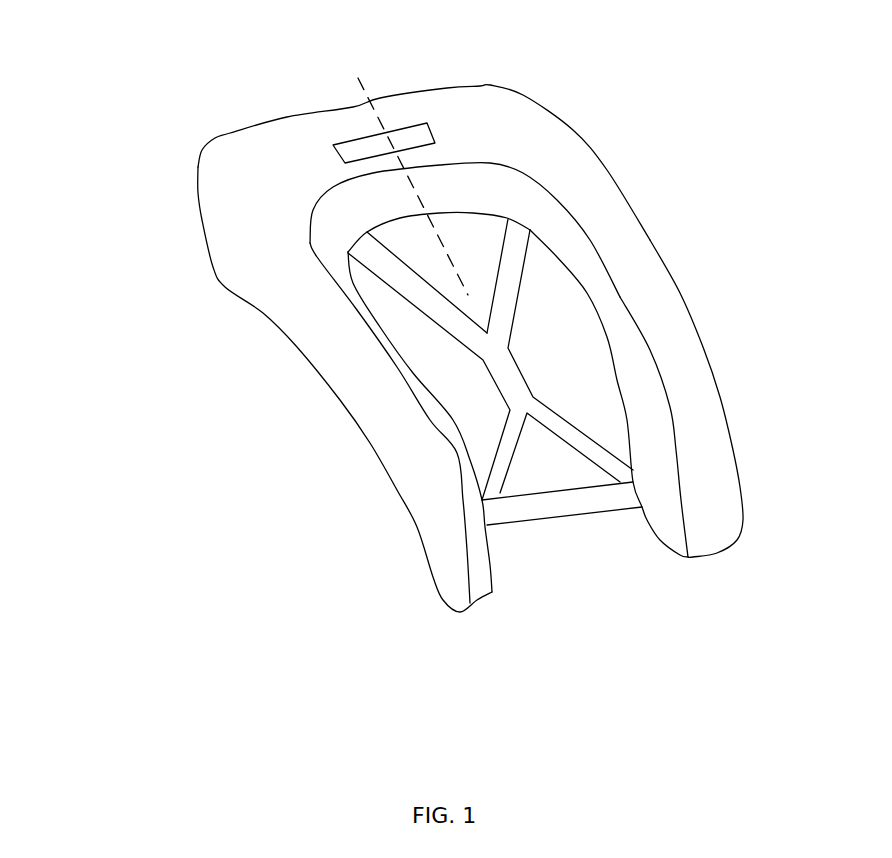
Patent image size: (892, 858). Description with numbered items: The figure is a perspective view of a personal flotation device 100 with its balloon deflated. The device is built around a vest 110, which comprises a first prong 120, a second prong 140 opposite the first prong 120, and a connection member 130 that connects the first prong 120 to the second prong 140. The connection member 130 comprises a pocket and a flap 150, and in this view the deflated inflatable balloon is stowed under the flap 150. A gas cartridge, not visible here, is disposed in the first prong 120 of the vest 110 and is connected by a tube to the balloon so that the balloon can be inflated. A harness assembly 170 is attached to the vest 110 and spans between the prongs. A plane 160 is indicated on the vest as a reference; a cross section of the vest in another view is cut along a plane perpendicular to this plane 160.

The personal flotation device 100 is at (127, 107).
The vest 110 is at (187, 244).
The first prong 120 is at (710, 468).
The connection member 130 is at (447, 113).
The second prong 140 is at (422, 488).
The flap 150 is at (354, 147).
The plane 160 is at (389, 74).
The harness assembly 170 is at (586, 465).